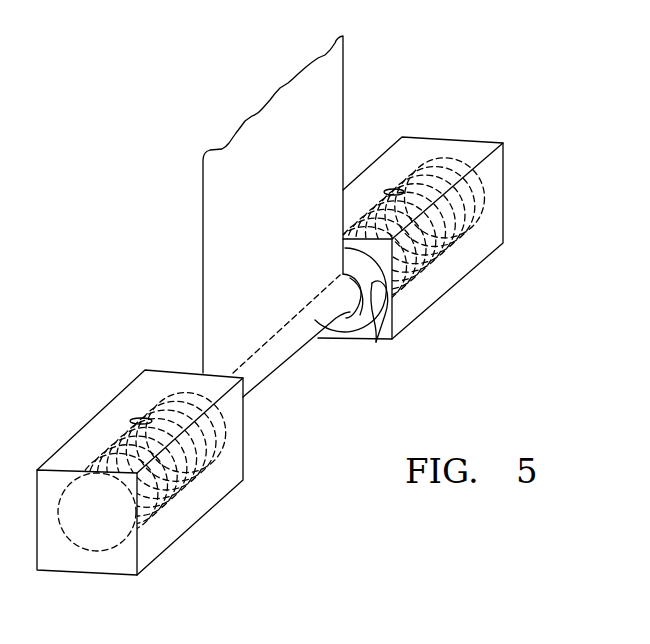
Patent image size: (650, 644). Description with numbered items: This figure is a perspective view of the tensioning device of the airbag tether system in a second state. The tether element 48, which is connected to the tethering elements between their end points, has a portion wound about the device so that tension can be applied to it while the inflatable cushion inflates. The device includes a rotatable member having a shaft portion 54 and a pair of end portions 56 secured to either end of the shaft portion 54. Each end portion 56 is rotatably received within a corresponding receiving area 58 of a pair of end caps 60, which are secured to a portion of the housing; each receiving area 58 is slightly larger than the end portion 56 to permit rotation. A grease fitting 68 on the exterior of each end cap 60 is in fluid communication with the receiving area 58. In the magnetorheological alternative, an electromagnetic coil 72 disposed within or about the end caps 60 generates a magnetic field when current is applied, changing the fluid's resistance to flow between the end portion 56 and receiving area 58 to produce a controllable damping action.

The element 48 is at (332, 137).
The shaft portion 54 is at (348, 315).
The end portion 56 is at (362, 318).
The receiving area 58 is at (376, 342).
The end cap 60 is at (173, 513).
The grease fitting 68 is at (131, 421).
The electromagnetic coil 72 is at (83, 463).